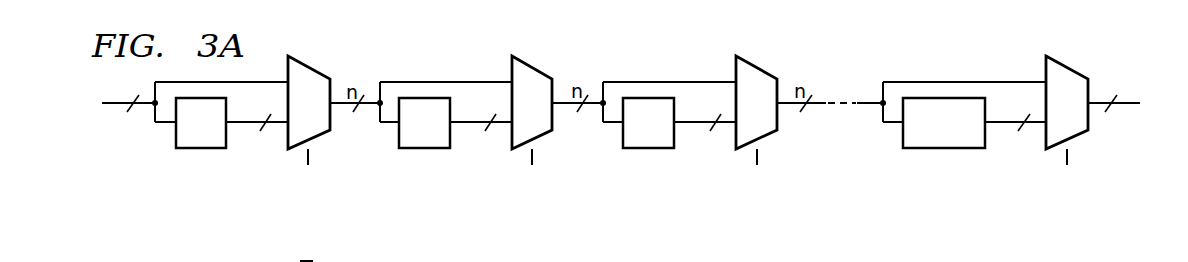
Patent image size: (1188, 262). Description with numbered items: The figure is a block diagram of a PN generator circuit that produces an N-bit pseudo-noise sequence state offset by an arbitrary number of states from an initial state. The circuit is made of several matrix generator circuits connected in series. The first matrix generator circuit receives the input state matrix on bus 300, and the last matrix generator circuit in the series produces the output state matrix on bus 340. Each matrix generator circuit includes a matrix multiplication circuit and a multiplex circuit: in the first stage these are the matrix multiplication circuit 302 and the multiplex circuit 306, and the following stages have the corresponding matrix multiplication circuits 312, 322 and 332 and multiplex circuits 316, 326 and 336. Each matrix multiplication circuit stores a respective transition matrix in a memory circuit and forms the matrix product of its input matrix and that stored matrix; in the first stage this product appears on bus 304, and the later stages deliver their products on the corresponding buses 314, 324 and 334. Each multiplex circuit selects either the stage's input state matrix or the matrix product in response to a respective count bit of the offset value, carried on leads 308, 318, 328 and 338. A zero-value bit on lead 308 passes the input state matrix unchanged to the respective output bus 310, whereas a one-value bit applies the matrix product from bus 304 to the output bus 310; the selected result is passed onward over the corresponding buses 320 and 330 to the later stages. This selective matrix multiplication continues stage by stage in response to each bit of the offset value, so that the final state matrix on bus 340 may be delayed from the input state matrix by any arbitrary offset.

The bus 300 is at (113, 105).
The matrix multiplication circuit 302 is at (200, 150).
The bus 304 is at (240, 124).
The multiplex circuit 306 is at (312, 63).
The lead 308 is at (308, 153).
The output bus 310 is at (445, 81).
The matrix multiplication circuit 312 is at (423, 150).
The multiplier output line 314 is at (465, 124).
The multiplexer 316 is at (550, 47).
The lead 318 is at (532, 153).
The bypass line 320 is at (666, 81).
The matrix multiplication circuit 322 is at (648, 150).
The multiplier output line 324 is at (690, 124).
The multiplexer 326 is at (757, 62).
The lead 328 is at (757, 153).
The bypass line 330 is at (960, 81).
The matrix multiplication circuit 332 is at (943, 150).
The multiplier output line 334 is at (1000, 124).
The multiplexer 336 is at (1085, 47).
The lead 338 is at (1067, 153).
The bus 340 is at (1128, 100).